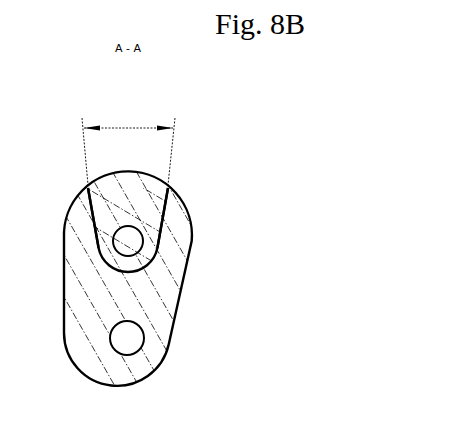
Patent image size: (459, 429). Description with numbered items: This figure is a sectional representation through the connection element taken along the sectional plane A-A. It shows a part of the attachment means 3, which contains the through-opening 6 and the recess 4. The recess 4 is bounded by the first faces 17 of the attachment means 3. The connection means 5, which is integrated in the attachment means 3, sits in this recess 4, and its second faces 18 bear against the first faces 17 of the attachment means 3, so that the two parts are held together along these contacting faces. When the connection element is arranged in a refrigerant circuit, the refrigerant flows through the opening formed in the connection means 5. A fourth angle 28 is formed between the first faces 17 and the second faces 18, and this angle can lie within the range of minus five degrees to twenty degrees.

The attachment means 3 is at (166, 292).
The recess 4 is at (162, 238).
The connection means 5 is at (99, 249).
The through-opening 6 is at (127, 346).
The first faces 17 is at (90, 208).
The second faces 18 is at (165, 208).
The fourth angle 28 is at (128, 128).